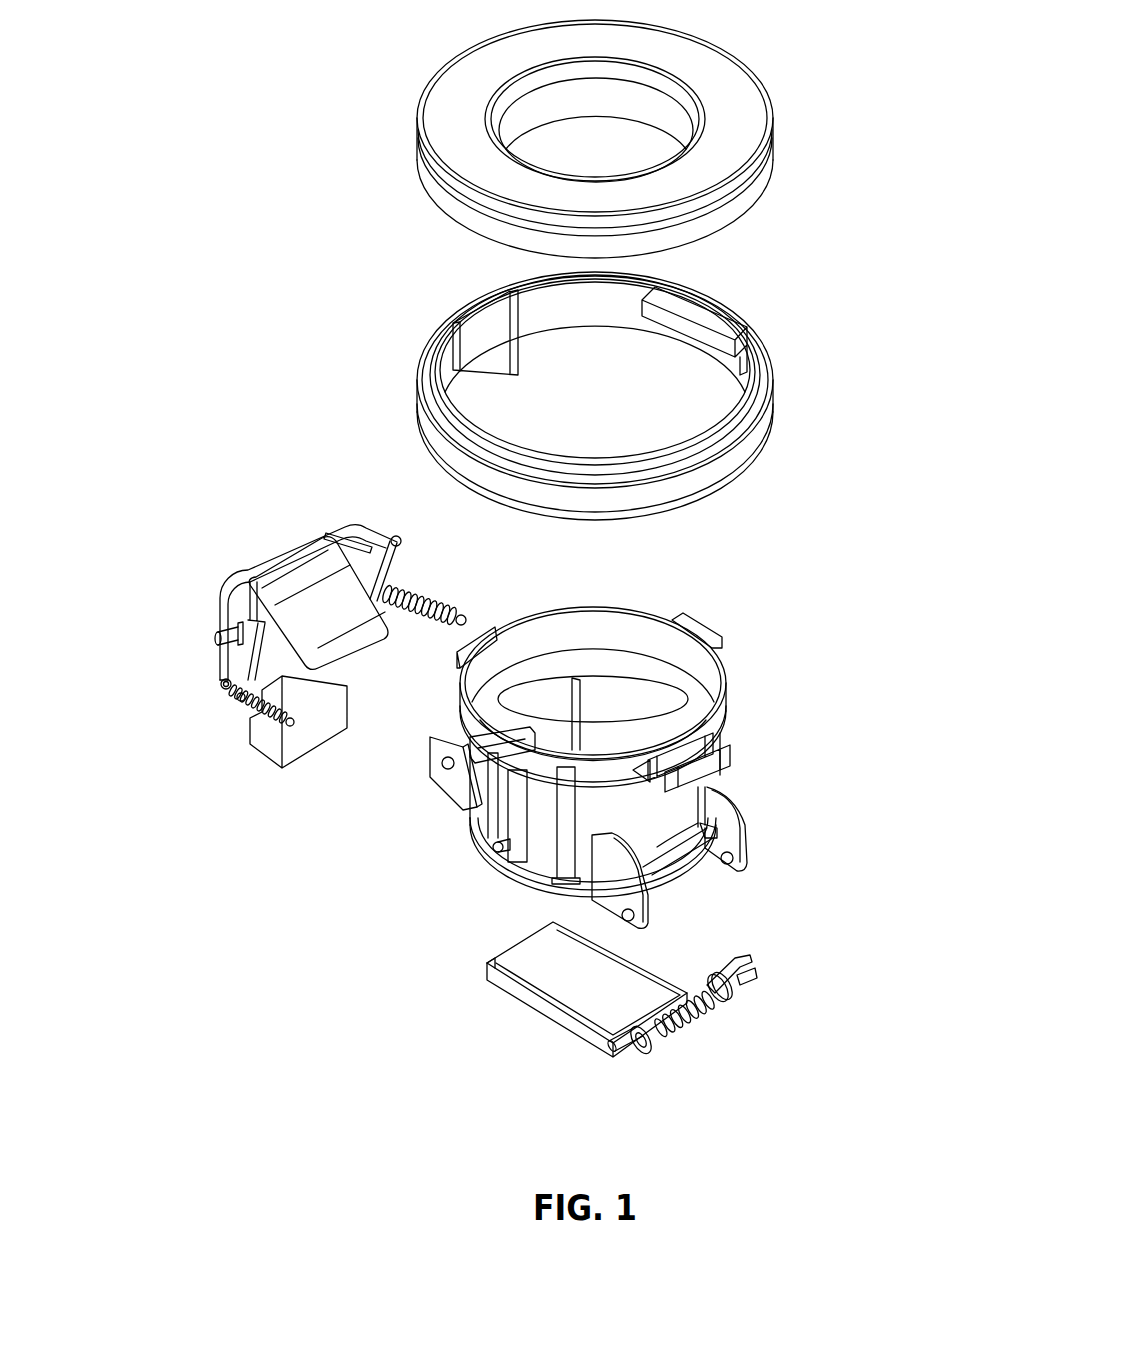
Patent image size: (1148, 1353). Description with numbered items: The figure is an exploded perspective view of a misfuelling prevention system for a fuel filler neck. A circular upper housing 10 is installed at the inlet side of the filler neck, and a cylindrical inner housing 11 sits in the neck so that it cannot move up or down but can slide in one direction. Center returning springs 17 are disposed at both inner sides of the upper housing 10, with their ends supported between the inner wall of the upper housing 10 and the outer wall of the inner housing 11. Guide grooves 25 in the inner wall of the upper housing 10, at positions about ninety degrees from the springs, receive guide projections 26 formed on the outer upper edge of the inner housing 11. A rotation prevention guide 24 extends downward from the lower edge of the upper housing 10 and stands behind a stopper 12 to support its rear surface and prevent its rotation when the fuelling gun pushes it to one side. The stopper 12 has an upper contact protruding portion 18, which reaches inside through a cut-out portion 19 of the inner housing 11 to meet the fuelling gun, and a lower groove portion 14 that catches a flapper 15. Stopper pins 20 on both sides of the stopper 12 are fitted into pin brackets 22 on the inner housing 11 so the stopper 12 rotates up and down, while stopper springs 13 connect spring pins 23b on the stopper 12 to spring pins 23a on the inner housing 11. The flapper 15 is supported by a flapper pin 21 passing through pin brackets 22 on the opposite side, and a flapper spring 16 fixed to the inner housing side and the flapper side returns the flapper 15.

The upper housing 10 is at (418, 422).
The inner housing 11 is at (707, 677).
The stopper 12 is at (278, 558).
The stopper spring 13 is at (242, 699).
The groove portion 14 is at (315, 700).
The flapper 15 is at (553, 992).
The flapper spring 16 is at (697, 1023).
The center returning spring 17 is at (481, 625).
The contact protruding portion 18 is at (358, 650).
The cut-out portion 19 is at (568, 715).
The stopper pin 20 is at (215, 643).
The flapper pin 21 is at (628, 1063).
The pin bracket 22 is at (455, 782).
The spring pin 23a is at (488, 835).
The spring pin 23b is at (220, 685).
The rotation prevention guide 24 is at (493, 363).
The guide groove 25 is at (700, 342).
The guide projection 26 is at (698, 630).